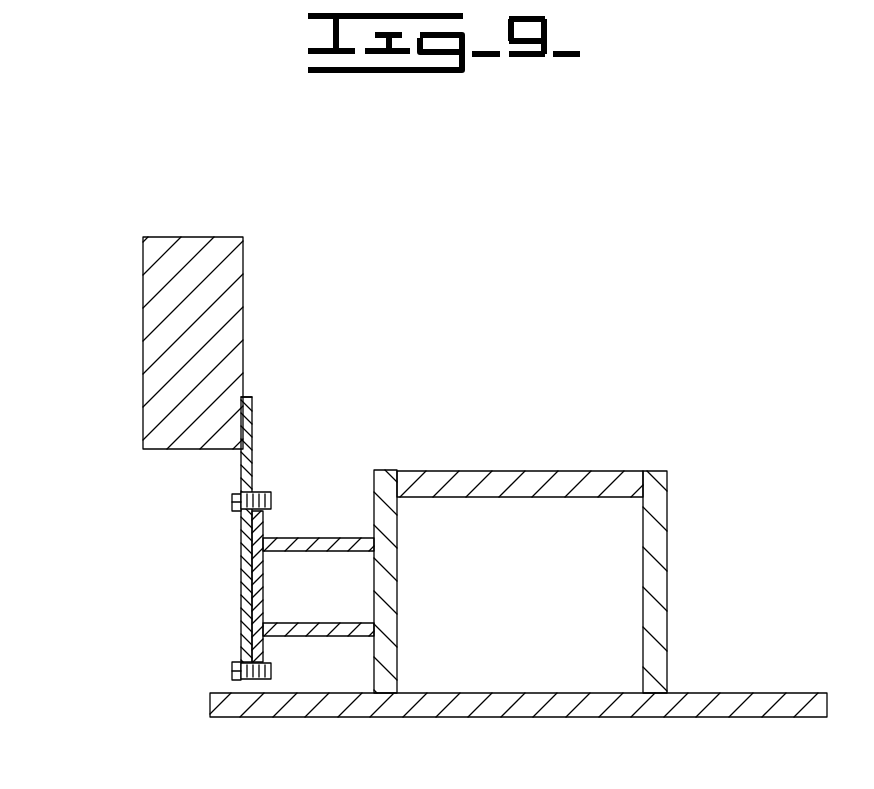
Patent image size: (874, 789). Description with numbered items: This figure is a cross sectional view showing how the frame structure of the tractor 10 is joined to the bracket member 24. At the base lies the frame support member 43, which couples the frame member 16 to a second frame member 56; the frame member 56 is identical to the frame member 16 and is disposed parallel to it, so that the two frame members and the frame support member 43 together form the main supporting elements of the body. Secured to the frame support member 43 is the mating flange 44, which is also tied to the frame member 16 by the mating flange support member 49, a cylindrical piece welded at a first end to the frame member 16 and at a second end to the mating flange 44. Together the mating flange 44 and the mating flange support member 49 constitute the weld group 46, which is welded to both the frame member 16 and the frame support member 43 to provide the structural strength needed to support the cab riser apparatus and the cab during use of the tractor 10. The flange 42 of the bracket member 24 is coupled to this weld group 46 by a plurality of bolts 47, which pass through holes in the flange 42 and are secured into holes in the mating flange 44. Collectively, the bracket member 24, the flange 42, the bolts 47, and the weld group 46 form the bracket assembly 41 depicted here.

The tractor 10 is at (200, 204).
The bracket member 24 is at (252, 388).
The flange 42 is at (255, 414).
The weld group 46 is at (273, 525).
The frame member 16 is at (398, 535).
The second frame member 56 is at (667, 508).
The bolts 47 is at (232, 492).
The bracket assembly 41 is at (205, 482).
The mating flange 44 is at (240, 574).
The frame support member 43 is at (478, 694).
The mating flange support member 49 is at (323, 598).